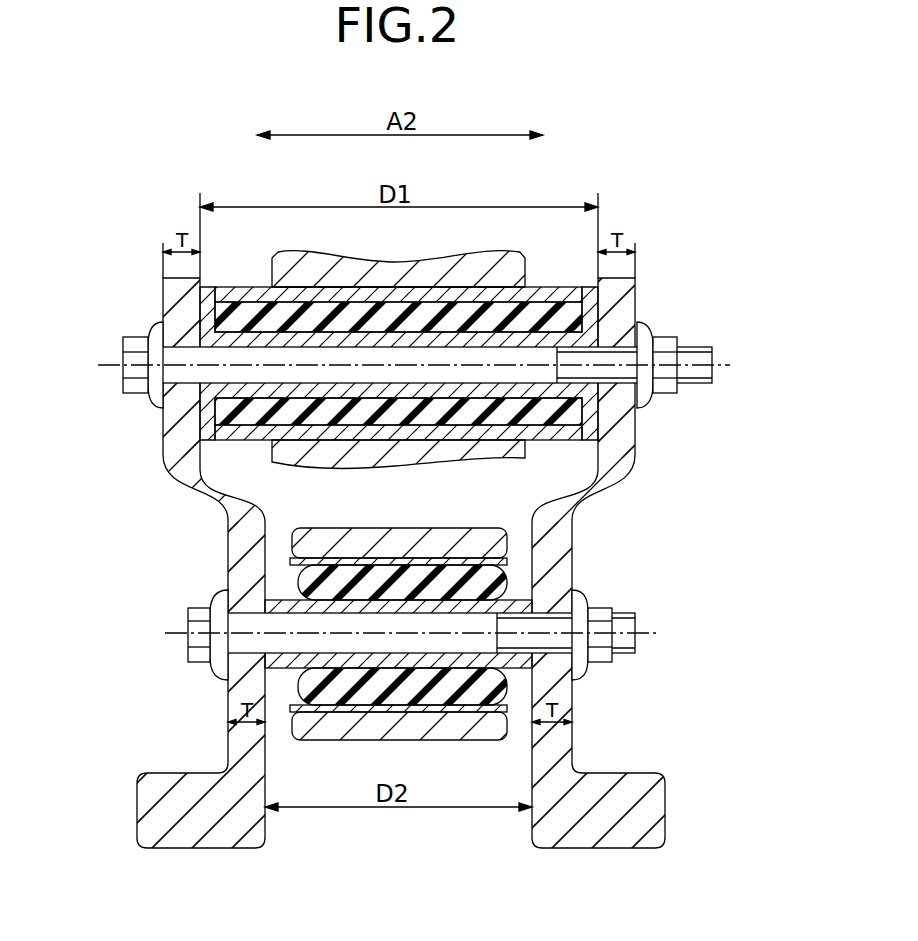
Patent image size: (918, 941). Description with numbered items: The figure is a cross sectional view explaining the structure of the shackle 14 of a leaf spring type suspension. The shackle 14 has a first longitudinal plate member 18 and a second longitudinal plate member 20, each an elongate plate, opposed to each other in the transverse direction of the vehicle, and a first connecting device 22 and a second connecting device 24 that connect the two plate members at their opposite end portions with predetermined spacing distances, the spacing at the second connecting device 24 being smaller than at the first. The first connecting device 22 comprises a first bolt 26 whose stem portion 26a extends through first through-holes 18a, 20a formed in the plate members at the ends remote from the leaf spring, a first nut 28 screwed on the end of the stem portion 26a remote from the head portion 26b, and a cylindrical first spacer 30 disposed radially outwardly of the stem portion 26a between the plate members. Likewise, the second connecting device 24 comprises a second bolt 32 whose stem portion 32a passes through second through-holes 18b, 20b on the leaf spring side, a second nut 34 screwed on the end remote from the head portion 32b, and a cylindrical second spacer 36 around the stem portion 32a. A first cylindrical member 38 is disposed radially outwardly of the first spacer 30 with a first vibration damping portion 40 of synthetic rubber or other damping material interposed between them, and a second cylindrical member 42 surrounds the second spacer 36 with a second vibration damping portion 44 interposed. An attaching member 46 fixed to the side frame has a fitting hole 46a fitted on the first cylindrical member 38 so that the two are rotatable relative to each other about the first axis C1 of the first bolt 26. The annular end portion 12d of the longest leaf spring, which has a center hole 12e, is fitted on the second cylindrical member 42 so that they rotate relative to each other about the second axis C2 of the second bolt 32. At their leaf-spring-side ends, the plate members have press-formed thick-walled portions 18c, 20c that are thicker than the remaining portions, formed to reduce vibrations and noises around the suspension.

The shackle 14 is at (653, 241).
The first longitudinal plate member 18 is at (165, 578).
The first through-hole 18a is at (188, 373).
The second through-hole 18b is at (240, 680).
The thick-walled portion 18c is at (210, 815).
The second longitudinal plate member 20 is at (633, 592).
The first through-hole 20a is at (613, 377).
The second through-hole 20b is at (552, 640).
The thick-walled portion 20c is at (605, 815).
The first connecting device 22 is at (696, 330).
The second connecting device 24 is at (616, 593).
The first bolt 26 is at (396, 337).
The stem portion 26a is at (282, 358).
The head portion 26b is at (123, 372).
The first nut 28 is at (660, 370).
The first spacer 30 is at (243, 393).
The second bolt 32 is at (382, 590).
The stem portion 32a is at (300, 628).
The head portion 32b is at (195, 640).
The second nut 34 is at (600, 645).
The second spacer 36 is at (282, 660).
The first cylindrical member 38 is at (535, 433).
The first vibration damping portion 40 is at (473, 410).
The second cylindrical member 42 is at (488, 697).
The second vibration damping portion 44 is at (472, 592).
The attaching member 46 is at (385, 268).
The fitting hole 46a is at (304, 290).
The annular end portion 12d is at (353, 545).
The center hole 12e is at (405, 695).
The first axis C1 is at (122, 340).
The second axis C2 is at (186, 622).